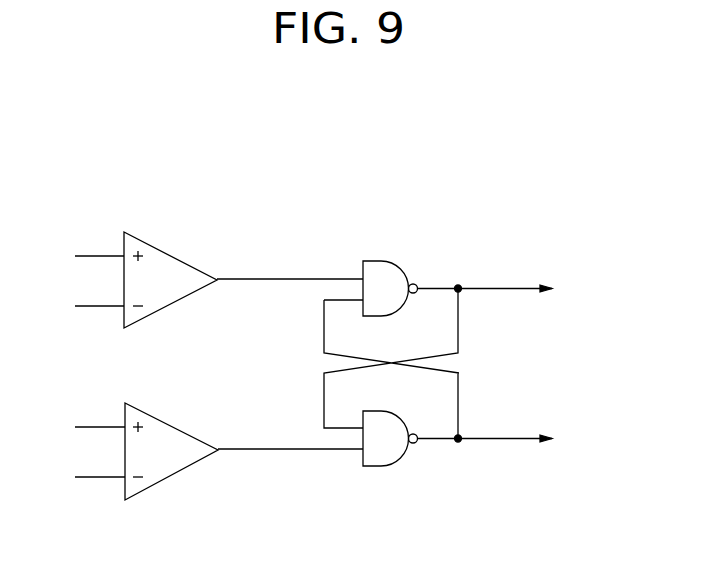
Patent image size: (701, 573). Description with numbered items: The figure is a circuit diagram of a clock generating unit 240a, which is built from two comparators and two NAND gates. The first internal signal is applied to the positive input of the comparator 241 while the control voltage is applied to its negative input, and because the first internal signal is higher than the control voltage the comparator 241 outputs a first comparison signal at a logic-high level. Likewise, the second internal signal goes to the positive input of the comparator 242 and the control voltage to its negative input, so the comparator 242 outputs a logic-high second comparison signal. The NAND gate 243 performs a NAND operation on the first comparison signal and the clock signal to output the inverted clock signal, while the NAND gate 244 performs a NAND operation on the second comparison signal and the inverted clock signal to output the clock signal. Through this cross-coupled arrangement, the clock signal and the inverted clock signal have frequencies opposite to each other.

The clock generating unit 240a is at (333, 144).
The comparator 241 is at (170, 253).
The comparator 242 is at (170, 424).
The NAND gate 243 is at (380, 259).
The NAND gate 244 is at (382, 468).